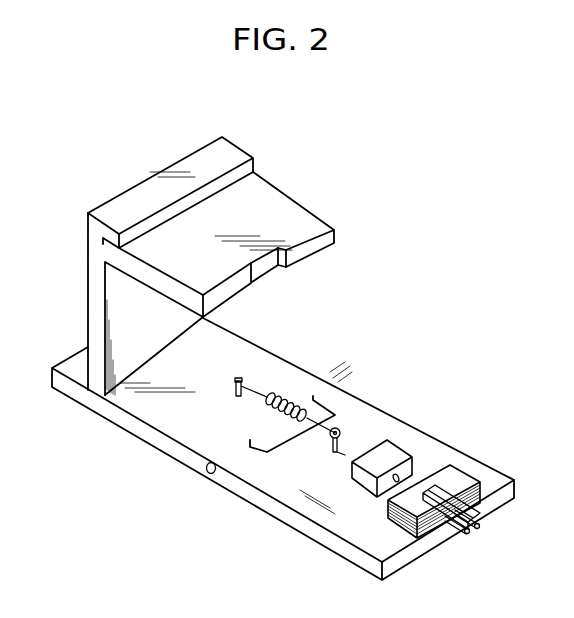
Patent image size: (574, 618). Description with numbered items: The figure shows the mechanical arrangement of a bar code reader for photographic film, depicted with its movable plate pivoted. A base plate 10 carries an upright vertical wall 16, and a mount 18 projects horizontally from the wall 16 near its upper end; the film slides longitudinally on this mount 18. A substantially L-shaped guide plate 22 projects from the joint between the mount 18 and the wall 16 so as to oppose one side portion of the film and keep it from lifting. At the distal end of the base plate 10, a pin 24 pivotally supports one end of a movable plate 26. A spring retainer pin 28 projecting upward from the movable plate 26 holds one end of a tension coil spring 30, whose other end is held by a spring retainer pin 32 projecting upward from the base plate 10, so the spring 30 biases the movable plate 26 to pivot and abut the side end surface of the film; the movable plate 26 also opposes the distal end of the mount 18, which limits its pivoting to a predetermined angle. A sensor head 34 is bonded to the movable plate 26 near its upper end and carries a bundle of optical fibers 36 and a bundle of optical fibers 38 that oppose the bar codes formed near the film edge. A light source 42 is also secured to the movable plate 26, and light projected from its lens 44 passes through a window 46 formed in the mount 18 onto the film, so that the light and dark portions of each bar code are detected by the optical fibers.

The base plate 10 is at (302, 362).
The vertical wall 16 is at (90, 305).
The mount 18 is at (282, 198).
The guide plate 22 is at (173, 170).
The pin 24 is at (208, 475).
The movable plate 26 is at (313, 507).
The spring retainer pin 28 is at (340, 434).
The tension coil spring 30 is at (267, 393).
The spring retainer pin 32 is at (228, 391).
The sensor head 34 is at (479, 462).
The bundle of optical fibers 36 is at (487, 516).
The bundle of optical fibers 38 is at (480, 541).
The light source 42 is at (393, 452).
The lens 44 is at (393, 483).
The window 46 is at (262, 265).